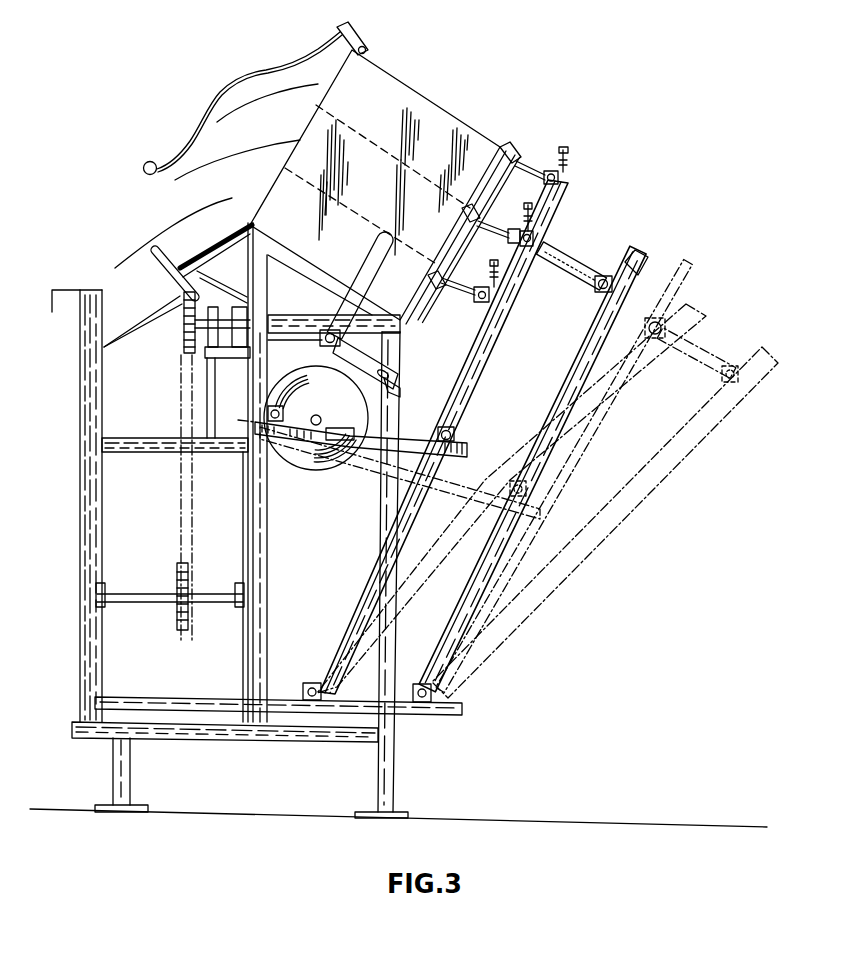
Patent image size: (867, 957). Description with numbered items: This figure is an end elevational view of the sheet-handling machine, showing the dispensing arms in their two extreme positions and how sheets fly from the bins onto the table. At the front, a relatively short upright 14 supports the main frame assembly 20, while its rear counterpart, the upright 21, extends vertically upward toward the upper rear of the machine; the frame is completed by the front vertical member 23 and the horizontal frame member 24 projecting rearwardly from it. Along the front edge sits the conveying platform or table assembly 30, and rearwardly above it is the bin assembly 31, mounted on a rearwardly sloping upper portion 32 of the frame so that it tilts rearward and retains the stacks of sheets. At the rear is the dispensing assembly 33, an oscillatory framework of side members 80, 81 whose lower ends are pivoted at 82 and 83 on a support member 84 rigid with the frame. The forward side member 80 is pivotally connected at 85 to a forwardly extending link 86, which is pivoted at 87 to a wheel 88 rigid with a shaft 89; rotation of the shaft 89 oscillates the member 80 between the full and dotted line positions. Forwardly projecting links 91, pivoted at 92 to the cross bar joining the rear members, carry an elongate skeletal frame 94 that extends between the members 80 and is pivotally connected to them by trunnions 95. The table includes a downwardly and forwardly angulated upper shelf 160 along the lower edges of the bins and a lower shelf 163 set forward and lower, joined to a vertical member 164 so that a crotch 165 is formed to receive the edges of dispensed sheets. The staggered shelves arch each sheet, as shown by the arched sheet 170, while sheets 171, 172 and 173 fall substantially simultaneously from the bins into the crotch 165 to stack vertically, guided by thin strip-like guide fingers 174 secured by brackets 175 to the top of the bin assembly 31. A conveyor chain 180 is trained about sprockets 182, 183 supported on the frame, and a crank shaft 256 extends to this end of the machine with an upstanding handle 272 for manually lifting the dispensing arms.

The front upright 14 is at (126, 775).
The main frame assembly 20 is at (249, 748).
The rear upright 21 is at (388, 768).
The front vertical member 23 is at (92, 522).
The horizontal frame member 24 is at (188, 734).
The conveying platform or table assembly 30 is at (150, 334).
The bin assembly 31 is at (487, 108).
The rearwardly sloping upper portion of frame 32 is at (321, 279).
The dispensing assembly 33 is at (547, 439).
The forward side member 80 is at (490, 360).
The rear side member 81 is at (576, 361).
The pivot 82 is at (311, 688).
The pivot 83 is at (431, 700).
The support member 84 is at (342, 702).
The pivotal connection 85 is at (456, 438).
The link 86 is at (365, 453).
The pivotal connection 87 is at (275, 404).
The wheel 88 is at (300, 466).
The shaft 89 is at (317, 415).
The link 91 is at (585, 266).
The pivot 92 is at (633, 268).
The skeletal frame 94 is at (580, 158).
The trunnion 95 is at (523, 232).
The upper shelf 160 is at (216, 248).
The lower shelf 163 is at (132, 330).
The vertical member 164 is at (103, 328).
The crotch 165 is at (110, 320).
The arched sheet 170 is at (140, 307).
The sheet 171 is at (217, 203).
The sheet 172 is at (248, 150).
The sheet 173 is at (292, 88).
The guide finger 174 is at (243, 81).
The bracket 175 is at (352, 33).
The chain 180 is at (197, 505).
The sprocket 182 is at (183, 565).
The sprocket 183 is at (183, 340).
The crank shaft 256 is at (329, 330).
The handle 272 is at (378, 240).